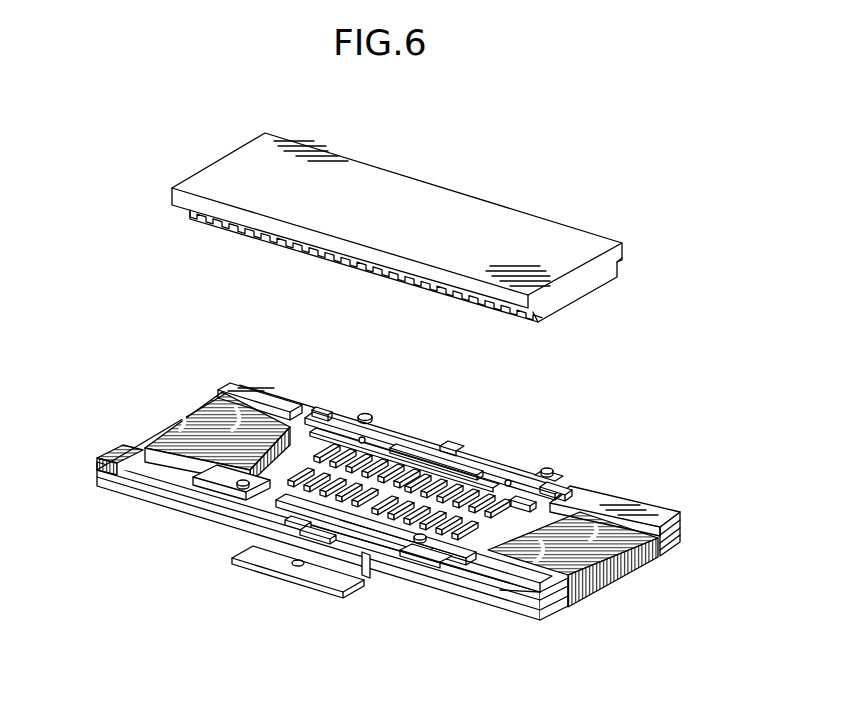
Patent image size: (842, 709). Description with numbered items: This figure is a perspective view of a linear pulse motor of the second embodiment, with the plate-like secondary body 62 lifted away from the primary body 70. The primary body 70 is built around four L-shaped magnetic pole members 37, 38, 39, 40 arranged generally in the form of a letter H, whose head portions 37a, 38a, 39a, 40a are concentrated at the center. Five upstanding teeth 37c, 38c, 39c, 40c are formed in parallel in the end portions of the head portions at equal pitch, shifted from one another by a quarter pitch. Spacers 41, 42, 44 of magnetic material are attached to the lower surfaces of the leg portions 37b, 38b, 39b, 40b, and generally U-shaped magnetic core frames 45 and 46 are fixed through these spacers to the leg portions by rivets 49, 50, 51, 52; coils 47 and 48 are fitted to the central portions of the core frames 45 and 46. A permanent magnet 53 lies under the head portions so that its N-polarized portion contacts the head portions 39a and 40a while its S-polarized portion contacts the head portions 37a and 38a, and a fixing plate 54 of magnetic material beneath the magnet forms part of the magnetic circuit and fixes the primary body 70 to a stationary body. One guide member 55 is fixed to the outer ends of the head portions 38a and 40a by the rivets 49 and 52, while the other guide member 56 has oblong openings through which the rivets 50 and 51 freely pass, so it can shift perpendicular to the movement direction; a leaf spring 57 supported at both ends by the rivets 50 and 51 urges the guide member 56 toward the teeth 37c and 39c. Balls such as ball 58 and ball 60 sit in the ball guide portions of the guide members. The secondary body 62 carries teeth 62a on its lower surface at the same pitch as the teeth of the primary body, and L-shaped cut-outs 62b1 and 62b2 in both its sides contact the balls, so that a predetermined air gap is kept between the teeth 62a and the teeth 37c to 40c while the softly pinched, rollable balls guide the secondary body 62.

The primary body 70 is at (123, 185).
The secondary body 62 is at (439, 249).
The teeth 62a is at (590, 287).
The cut-out 62b1 is at (531, 320).
The cut-out 62b2 is at (620, 265).
The leg portion 39b is at (244, 384).
The coil 48 is at (196, 428).
The head portion 39a is at (313, 414).
The teeth 39c is at (314, 383).
The ball 60 is at (395, 446).
The rivet 51 is at (366, 413).
The guide member 56 is at (447, 443).
The magnetic pole member 39 is at (442, 440).
The head portion 37a is at (514, 498).
The teeth 37c is at (566, 441).
The magnetic pole member 37 is at (470, 472).
The ball 58 is at (511, 480).
The rivet 50 is at (552, 470).
The leaf spring 57 is at (568, 488).
The leg portion 37b is at (622, 497).
The spacer 41 is at (681, 530).
The coil 47 is at (615, 575).
The leg portion 40b is at (118, 455).
The magnetic core frame 46 is at (130, 497).
The spacer 44 is at (177, 503).
The rivet 52 is at (210, 492).
The magnetic pole member 40 is at (246, 502).
The head portion 40a is at (272, 555).
The teeth 40c is at (340, 565).
The fixing plate 54 is at (321, 592).
The permanent magnet 53 is at (340, 562).
The head portion 38a is at (380, 582).
The teeth 38c is at (403, 596).
The guide member 55 is at (418, 543).
The rivet 49 is at (430, 568).
The spacer 42 is at (492, 592).
The magnetic pole member 38 is at (476, 590).
The leg portion 38b is at (546, 594).
The magnetic core frame 45 is at (547, 622).